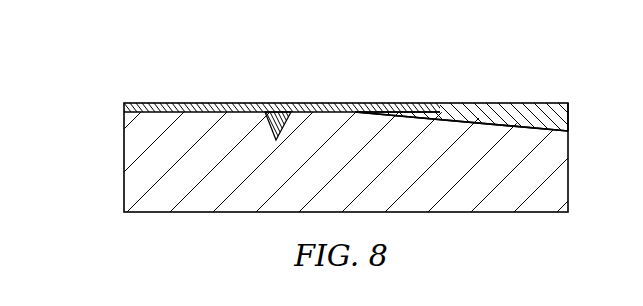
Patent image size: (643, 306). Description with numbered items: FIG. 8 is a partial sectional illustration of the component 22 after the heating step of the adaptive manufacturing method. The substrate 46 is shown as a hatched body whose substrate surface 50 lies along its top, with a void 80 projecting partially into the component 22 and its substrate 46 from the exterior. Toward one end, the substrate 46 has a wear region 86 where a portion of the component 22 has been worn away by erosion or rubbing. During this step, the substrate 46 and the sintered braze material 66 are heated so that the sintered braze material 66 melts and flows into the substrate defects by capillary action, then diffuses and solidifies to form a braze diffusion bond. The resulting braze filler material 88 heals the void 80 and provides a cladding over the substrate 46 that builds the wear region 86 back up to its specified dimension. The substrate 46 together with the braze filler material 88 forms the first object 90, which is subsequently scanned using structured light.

The component 22 is at (94, 88).
The substrate 46 is at (124, 170).
The substrate surface 50 is at (194, 103).
The sintered braze material 66 is at (519, 112).
The braze filler material 88 is at (461, 121).
The void 80 is at (284, 118).
The wear region 86 is at (482, 134).
The first object 90 is at (580, 85).